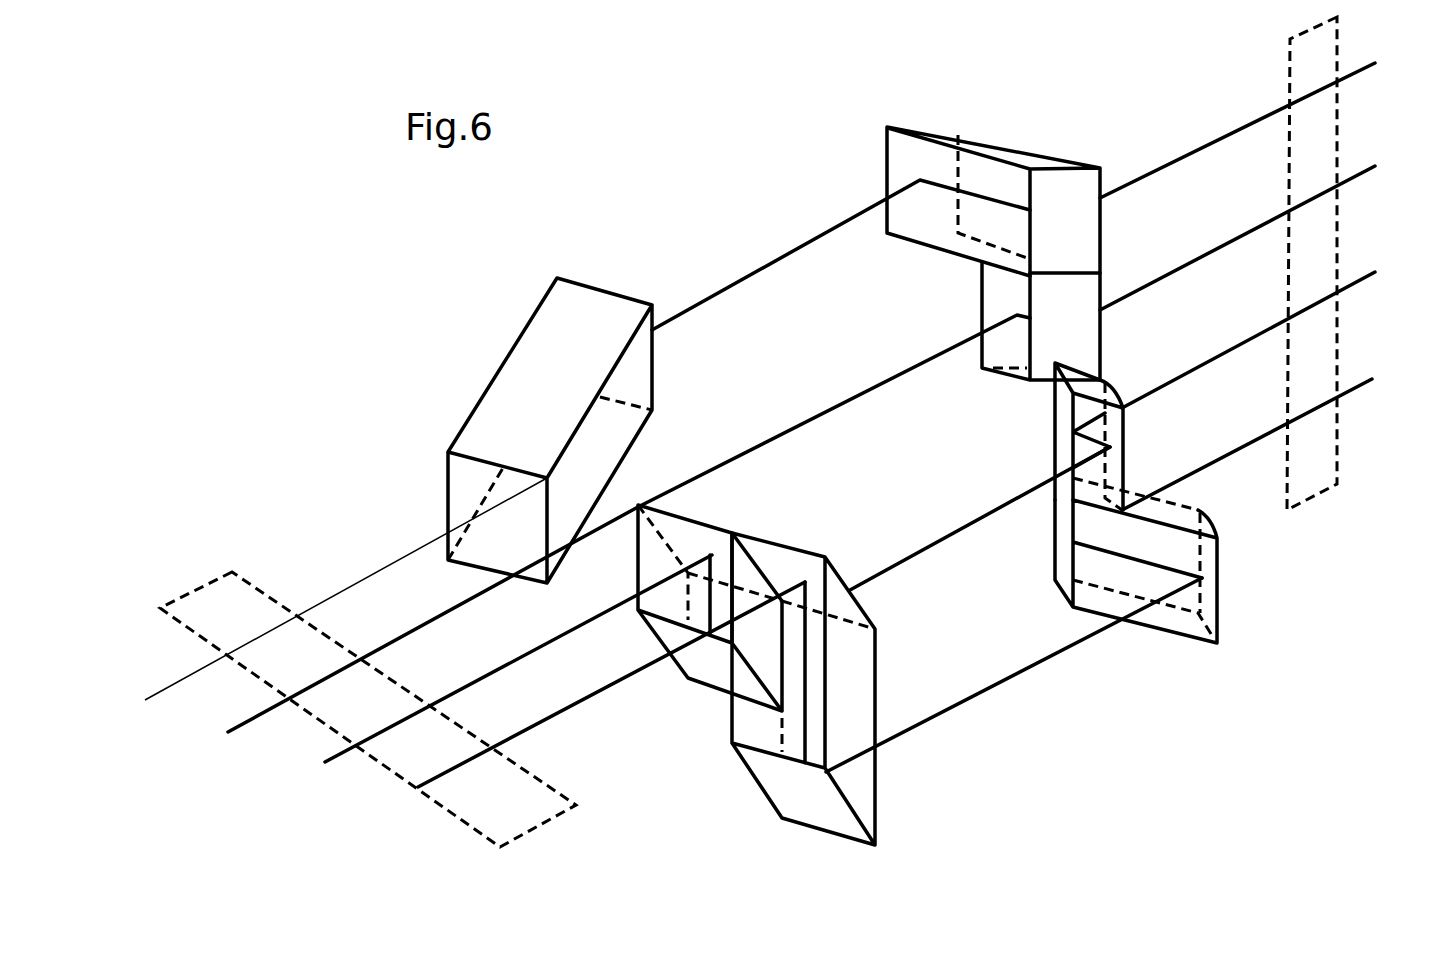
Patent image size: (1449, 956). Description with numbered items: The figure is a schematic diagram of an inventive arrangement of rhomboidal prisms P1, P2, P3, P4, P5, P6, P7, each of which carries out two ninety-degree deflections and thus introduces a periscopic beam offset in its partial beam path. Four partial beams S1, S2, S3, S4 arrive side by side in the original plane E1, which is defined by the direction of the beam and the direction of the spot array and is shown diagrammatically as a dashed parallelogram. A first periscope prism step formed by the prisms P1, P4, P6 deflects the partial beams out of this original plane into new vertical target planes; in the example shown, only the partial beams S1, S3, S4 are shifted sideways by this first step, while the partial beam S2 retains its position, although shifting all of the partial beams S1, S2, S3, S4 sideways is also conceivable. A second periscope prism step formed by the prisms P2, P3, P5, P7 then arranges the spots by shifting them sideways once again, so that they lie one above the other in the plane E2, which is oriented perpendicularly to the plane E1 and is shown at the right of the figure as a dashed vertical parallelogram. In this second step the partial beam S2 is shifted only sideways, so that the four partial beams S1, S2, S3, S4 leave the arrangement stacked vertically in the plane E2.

The rhomboidal prism P1 is at (573, 300).
The rhomboidal prism P2 is at (1000, 143).
The rhomboidal prism P3 is at (1088, 347).
The rhomboidal prism P4 is at (710, 660).
The rhomboidal prism P5 is at (1125, 420).
The rhomboidal prism P6 is at (865, 788).
The rhomboidal prism P7 is at (1180, 622).
The original plane E1 is at (368, 673).
The plane E2 is at (1319, 290).
The partial beam S1 is at (786, 387).
The partial beam S2 is at (825, 461).
The partial beam S3 is at (865, 538).
The partial beam S4 is at (901, 602).